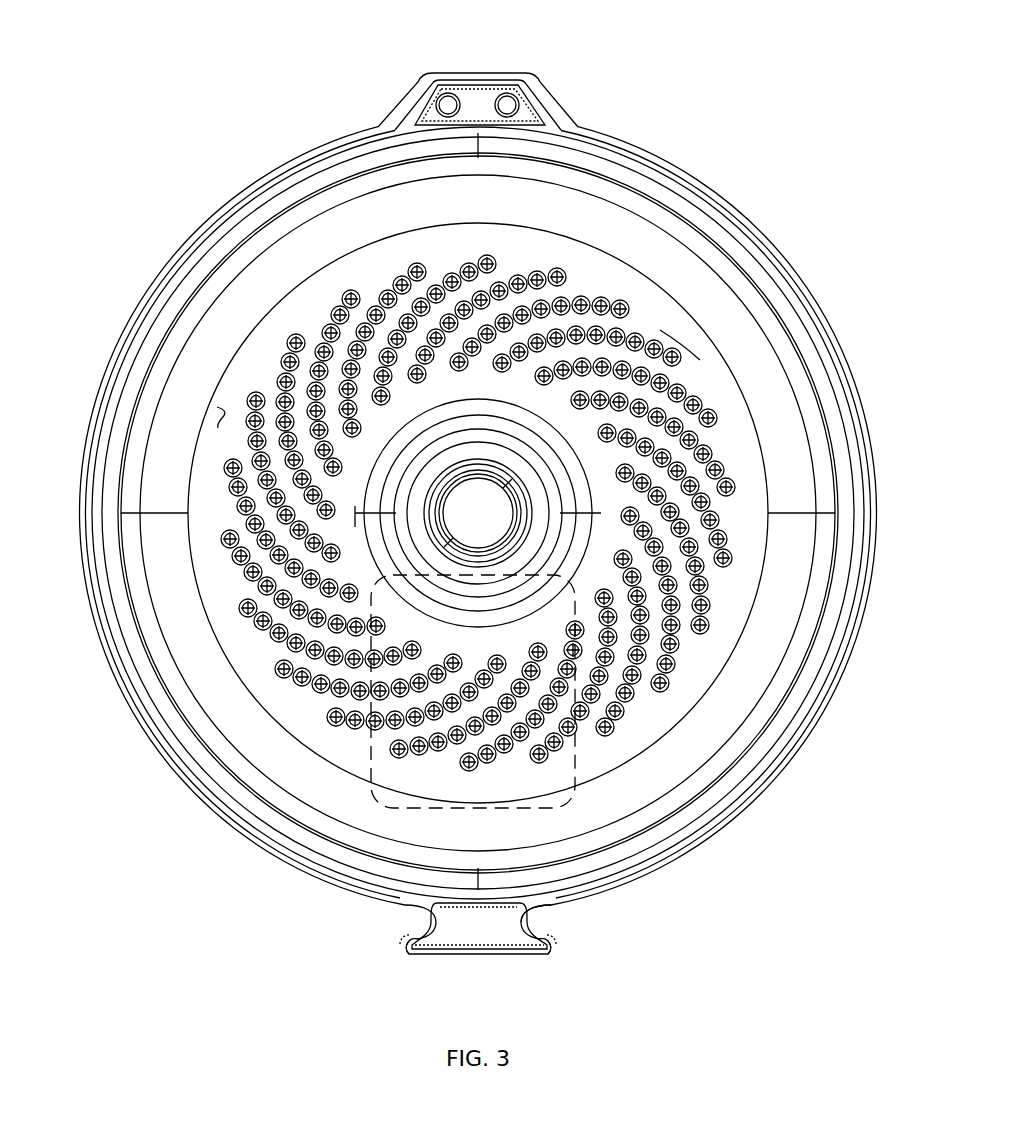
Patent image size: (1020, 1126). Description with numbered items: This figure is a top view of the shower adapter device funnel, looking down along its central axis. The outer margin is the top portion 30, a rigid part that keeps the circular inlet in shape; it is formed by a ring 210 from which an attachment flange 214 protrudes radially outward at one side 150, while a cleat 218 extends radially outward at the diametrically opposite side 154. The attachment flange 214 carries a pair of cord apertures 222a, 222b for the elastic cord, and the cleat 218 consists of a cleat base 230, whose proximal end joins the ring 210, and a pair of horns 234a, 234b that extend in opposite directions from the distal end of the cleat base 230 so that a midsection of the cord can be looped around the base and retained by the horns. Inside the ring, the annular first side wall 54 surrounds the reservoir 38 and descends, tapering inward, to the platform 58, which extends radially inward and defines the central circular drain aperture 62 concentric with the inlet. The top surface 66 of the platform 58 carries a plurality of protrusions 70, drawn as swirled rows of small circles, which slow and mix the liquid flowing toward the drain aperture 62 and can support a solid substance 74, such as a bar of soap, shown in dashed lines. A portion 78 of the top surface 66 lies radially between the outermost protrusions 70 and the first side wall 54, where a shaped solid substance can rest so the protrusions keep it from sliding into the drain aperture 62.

The top portion 30 is at (808, 333).
The reservoir 38 is at (180, 615).
The first side wall 54 is at (760, 710).
The platform 58 is at (253, 363).
The drain aperture 62 is at (362, 522).
The top surface 66 is at (217, 407).
The protrusions 70 is at (254, 392).
The solid substance 74 is at (371, 748).
The portion 78 is at (678, 318).
The side 150 is at (478, 133).
The side 154 is at (479, 890).
The ring 210 is at (850, 403).
The attachment flange 214 is at (444, 70).
The cleat 218 is at (496, 969).
The cord aperture 222a is at (438, 102).
The cord aperture 222b is at (515, 102).
The cleat base 230 is at (527, 917).
The horn 234a is at (405, 945).
The horn 234b is at (552, 945).